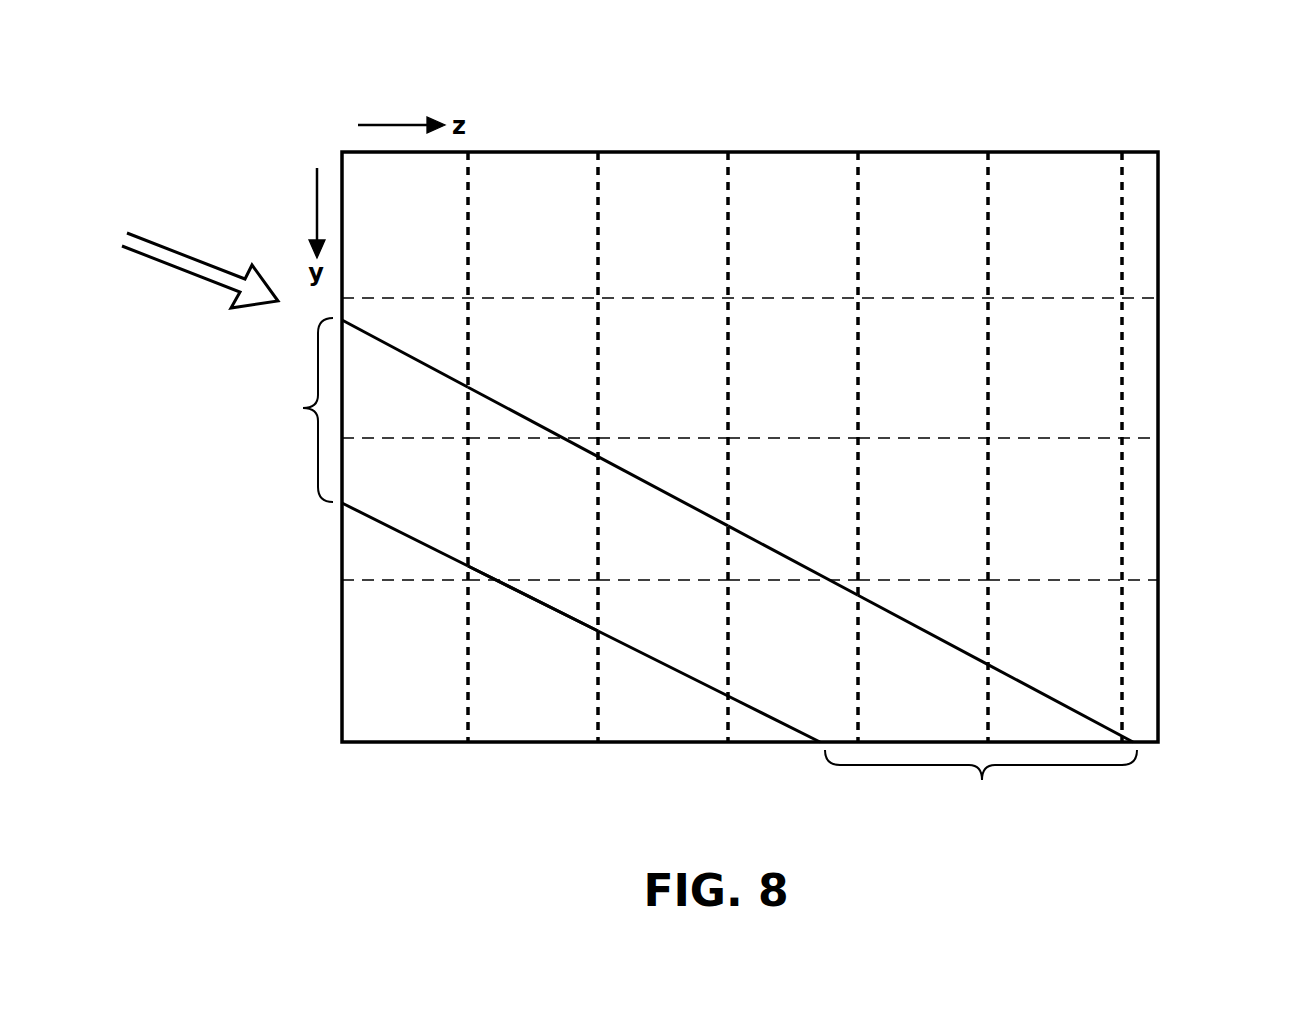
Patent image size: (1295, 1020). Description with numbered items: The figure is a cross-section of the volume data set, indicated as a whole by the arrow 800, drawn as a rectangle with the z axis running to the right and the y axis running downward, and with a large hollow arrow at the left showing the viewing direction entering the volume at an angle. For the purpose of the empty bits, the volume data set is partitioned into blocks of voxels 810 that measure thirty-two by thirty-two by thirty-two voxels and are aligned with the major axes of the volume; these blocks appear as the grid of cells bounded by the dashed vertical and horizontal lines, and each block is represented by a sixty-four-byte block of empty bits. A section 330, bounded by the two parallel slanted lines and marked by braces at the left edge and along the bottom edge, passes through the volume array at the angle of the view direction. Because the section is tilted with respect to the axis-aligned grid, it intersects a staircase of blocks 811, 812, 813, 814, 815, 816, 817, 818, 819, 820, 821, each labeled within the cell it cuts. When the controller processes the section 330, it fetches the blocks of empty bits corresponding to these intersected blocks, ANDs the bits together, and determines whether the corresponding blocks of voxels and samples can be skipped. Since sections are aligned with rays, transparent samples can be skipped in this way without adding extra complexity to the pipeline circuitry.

The volume data set / sample grid 800 is at (777, 140).
The blocks of voxels 810 is at (1130, 246).
The section 330 is at (670, 565).
The block 811 is at (405, 379).
The block 812 is at (405, 518).
The block 813 is at (533, 405).
The block 814 is at (533, 555).
The block 815 is at (533, 610).
The block 816 is at (663, 482).
The block 817 is at (663, 638).
The block 818 is at (793, 516).
The block 819 is at (793, 661).
The block 820 is at (923, 631).
The block 821 is at (1073, 661).